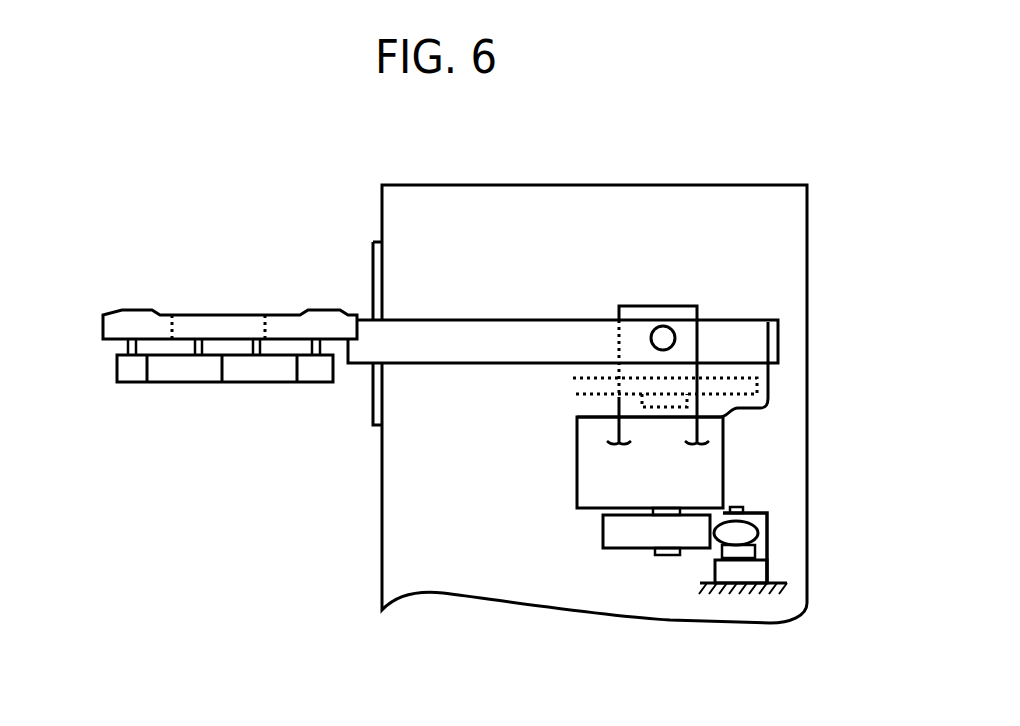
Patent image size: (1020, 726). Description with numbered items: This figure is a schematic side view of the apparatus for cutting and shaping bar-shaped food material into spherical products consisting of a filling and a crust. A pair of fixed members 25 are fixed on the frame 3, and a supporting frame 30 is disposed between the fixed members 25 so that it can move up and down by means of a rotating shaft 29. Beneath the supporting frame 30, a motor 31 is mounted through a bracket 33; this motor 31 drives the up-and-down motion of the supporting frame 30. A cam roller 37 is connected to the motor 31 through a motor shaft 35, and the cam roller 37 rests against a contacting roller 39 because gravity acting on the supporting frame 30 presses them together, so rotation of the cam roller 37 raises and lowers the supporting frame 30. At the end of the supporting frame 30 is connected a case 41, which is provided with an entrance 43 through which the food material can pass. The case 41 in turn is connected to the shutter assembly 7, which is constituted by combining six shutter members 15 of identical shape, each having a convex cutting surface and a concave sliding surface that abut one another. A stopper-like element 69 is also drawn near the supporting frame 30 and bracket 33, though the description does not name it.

The frame 3 is at (807, 240).
The shutter assembly 7 is at (108, 372).
The shutter member 15 is at (160, 375).
The fixed member 25 is at (627, 303).
The rotating shaft 29 is at (672, 329).
The supporting frame 30 is at (423, 345).
The motor 31 is at (598, 462).
The bracket 33 is at (577, 410).
The motor shaft 35 is at (652, 513).
The cam roller 37 is at (603, 540).
The contacting roller 39 is at (757, 535).
The case 41 is at (103, 330).
The entrance 43 is at (214, 312).
The stopper 69 is at (727, 397).